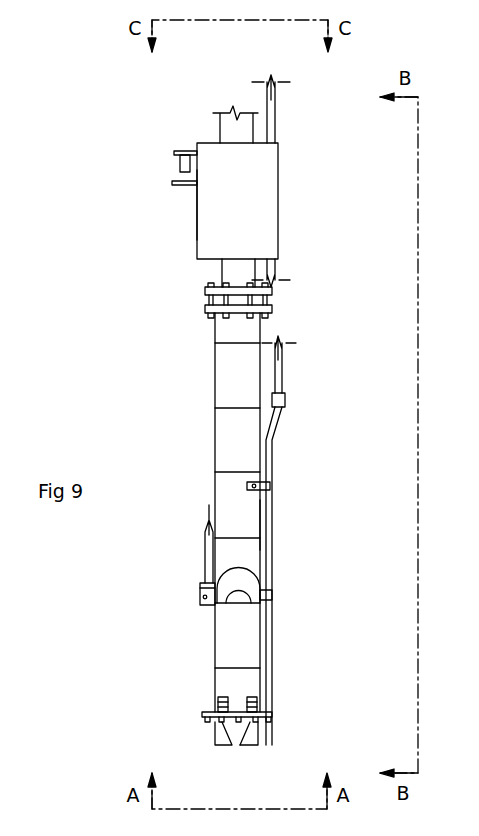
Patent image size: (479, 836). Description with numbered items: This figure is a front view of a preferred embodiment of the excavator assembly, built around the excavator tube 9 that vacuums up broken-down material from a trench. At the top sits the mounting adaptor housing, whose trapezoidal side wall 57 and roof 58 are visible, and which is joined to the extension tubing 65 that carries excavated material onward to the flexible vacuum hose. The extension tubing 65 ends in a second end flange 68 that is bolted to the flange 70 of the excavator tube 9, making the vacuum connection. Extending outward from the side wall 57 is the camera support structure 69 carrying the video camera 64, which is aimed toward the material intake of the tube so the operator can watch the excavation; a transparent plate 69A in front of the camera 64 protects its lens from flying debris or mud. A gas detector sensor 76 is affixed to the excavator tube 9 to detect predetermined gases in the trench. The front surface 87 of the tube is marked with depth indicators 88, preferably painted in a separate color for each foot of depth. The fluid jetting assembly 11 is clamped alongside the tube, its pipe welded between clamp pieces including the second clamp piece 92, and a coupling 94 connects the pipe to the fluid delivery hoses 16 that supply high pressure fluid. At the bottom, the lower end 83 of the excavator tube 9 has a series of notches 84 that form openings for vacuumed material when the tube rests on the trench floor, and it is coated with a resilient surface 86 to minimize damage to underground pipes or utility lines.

The excavator tube 9 is at (215, 372).
The fluid jetting assembly 11 is at (273, 612).
The fluid delivery hoses 16 is at (275, 110).
The side wall 57 is at (197, 213).
The roof 58 is at (247, 195).
The video camera 64 is at (178, 165).
The extension tubing 65 is at (220, 127).
The second end flange 68 is at (275, 292).
The camera support structure 69 is at (176, 153).
The transparent plate 69A is at (180, 190).
The flange 70 is at (272, 308).
The gas detector sensor 76 is at (200, 585).
The lower end 83 is at (193, 737).
The notches 84 is at (250, 748).
The resilient surface 86 is at (238, 740).
The front surface 87 is at (235, 628).
The depth indicators 88 is at (260, 525).
The second clamp piece 92 is at (255, 560).
The coupling 94 is at (285, 402).